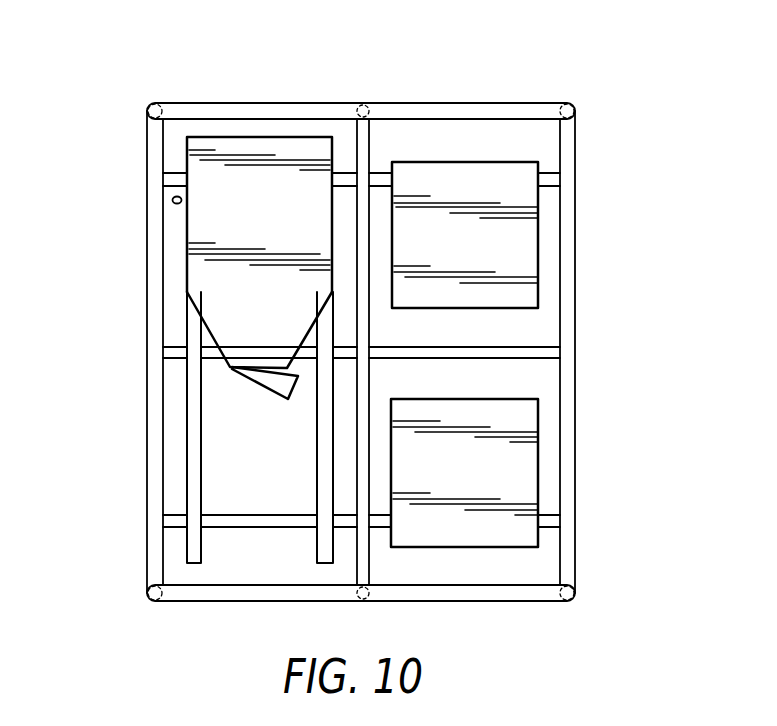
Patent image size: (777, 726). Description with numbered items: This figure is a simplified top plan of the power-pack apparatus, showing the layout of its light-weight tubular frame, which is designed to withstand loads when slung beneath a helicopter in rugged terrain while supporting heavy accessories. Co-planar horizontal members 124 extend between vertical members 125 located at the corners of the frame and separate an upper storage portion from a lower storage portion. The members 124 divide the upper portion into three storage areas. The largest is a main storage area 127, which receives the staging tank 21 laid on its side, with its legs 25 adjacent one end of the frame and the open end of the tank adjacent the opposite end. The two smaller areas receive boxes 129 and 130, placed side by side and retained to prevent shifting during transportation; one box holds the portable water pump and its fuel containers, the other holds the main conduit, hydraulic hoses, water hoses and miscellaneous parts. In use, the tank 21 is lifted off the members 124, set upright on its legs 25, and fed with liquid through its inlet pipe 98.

The staging tank 21 is at (255, 194).
The legs 25 is at (193, 462).
The inlet pipe 98 is at (172, 201).
The horizontal members 124 is at (552, 173).
The vertical members 125 is at (150, 104).
The main storage area 127 is at (181, 375).
The box 129 is at (515, 467).
The box 130 is at (515, 245).